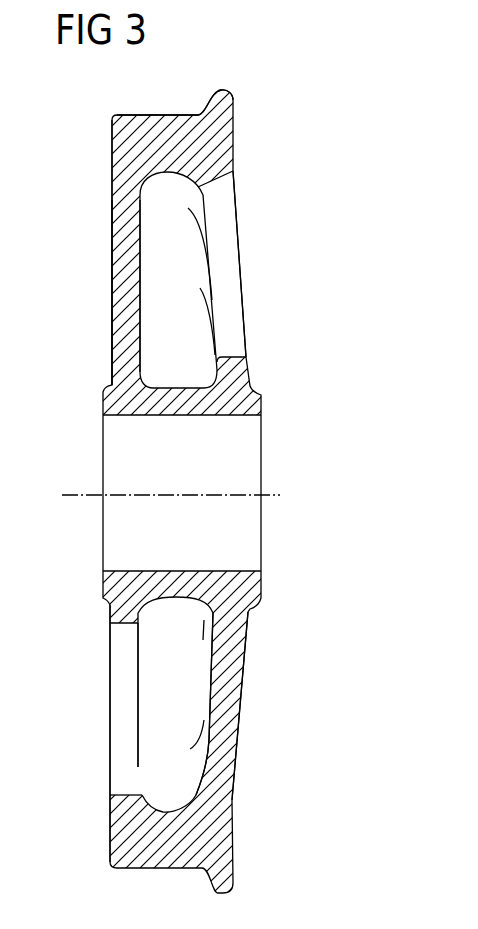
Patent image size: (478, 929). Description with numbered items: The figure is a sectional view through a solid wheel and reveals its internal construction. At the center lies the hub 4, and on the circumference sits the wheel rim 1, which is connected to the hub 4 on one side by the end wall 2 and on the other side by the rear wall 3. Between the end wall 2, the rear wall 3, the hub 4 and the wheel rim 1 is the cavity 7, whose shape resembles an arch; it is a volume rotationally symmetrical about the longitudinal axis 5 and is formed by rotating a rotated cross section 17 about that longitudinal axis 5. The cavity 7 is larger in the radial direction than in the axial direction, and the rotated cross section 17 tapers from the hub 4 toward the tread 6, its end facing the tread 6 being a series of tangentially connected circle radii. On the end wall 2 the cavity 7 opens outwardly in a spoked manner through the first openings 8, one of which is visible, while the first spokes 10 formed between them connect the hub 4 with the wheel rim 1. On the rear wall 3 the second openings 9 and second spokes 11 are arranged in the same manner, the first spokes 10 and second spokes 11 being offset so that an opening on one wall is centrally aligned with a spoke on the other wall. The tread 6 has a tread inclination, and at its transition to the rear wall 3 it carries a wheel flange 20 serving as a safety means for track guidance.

The wheel rim 1 is at (150, 857).
The end wall 2 is at (112, 292).
The rear wall 3 is at (240, 722).
The hub 4 is at (203, 485).
The longitudinal axis 5 is at (270, 495).
The tread 6 is at (163, 113).
The cavity 7 is at (177, 338).
The first openings 8 is at (122, 697).
The second openings 9 is at (225, 247).
The first spokes 10 is at (120, 338).
The second spokes 11 is at (218, 773).
The rotated cross section 17 is at (217, 315).
The wheel flange 20 is at (236, 100).